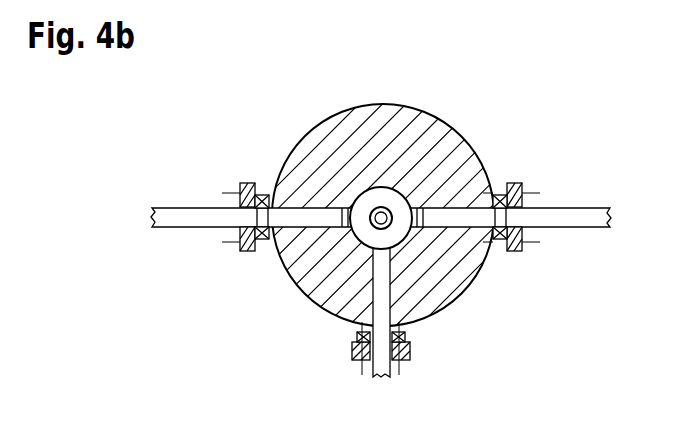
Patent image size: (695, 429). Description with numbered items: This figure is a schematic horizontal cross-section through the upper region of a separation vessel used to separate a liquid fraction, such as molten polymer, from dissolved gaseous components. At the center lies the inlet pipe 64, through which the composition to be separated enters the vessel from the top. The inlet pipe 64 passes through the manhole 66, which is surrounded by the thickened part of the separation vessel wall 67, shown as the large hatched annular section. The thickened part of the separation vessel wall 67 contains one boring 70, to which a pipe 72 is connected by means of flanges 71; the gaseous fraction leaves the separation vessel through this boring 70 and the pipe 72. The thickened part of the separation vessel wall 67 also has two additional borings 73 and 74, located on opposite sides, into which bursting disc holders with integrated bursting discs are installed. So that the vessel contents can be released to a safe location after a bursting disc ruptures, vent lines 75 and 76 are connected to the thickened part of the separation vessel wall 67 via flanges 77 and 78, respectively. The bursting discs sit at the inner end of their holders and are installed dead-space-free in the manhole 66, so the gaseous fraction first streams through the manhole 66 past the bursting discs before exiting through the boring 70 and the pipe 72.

The inlet pipe 64 is at (389, 224).
The manhole 66 is at (368, 232).
The thickened part of the separation vessel wall 67 is at (410, 235).
The boring 70 is at (387, 292).
The flanges 71 is at (352, 349).
The pipe 72 is at (384, 368).
The boring 73 is at (297, 220).
The boring 74 is at (467, 220).
The vent line 75 is at (200, 220).
The vent line 76 is at (563, 217).
The flange 77 is at (251, 184).
The flange 78 is at (514, 184).